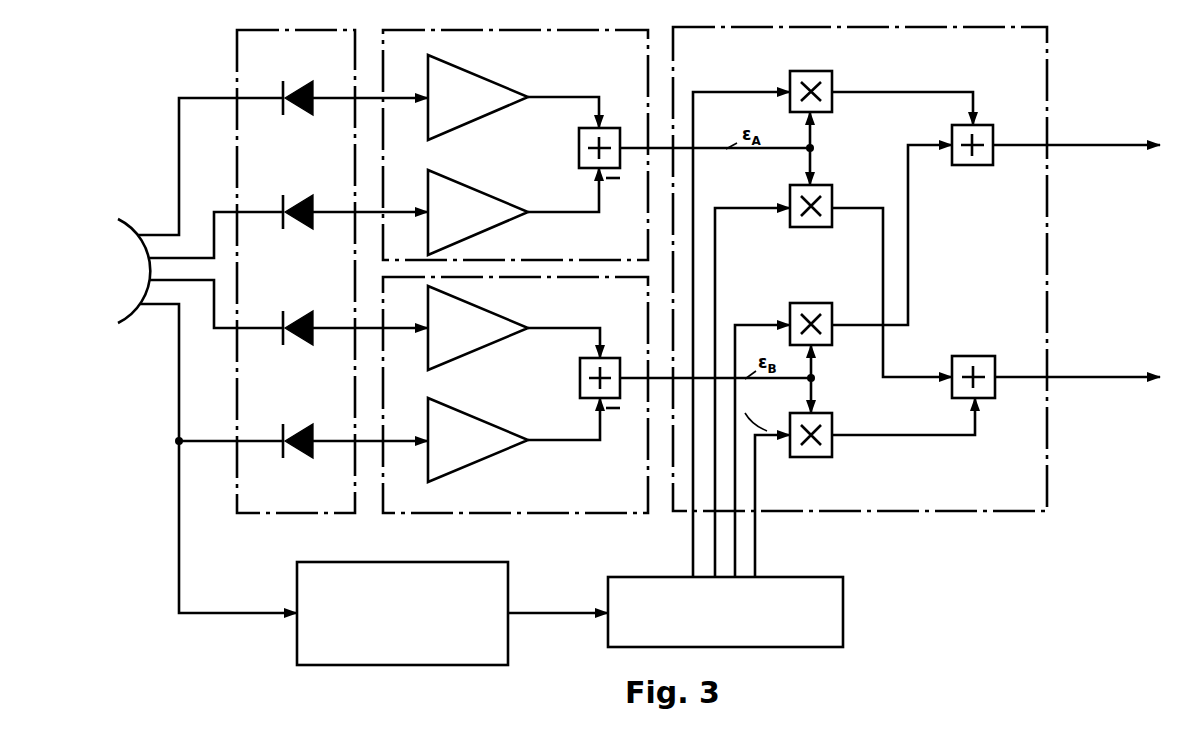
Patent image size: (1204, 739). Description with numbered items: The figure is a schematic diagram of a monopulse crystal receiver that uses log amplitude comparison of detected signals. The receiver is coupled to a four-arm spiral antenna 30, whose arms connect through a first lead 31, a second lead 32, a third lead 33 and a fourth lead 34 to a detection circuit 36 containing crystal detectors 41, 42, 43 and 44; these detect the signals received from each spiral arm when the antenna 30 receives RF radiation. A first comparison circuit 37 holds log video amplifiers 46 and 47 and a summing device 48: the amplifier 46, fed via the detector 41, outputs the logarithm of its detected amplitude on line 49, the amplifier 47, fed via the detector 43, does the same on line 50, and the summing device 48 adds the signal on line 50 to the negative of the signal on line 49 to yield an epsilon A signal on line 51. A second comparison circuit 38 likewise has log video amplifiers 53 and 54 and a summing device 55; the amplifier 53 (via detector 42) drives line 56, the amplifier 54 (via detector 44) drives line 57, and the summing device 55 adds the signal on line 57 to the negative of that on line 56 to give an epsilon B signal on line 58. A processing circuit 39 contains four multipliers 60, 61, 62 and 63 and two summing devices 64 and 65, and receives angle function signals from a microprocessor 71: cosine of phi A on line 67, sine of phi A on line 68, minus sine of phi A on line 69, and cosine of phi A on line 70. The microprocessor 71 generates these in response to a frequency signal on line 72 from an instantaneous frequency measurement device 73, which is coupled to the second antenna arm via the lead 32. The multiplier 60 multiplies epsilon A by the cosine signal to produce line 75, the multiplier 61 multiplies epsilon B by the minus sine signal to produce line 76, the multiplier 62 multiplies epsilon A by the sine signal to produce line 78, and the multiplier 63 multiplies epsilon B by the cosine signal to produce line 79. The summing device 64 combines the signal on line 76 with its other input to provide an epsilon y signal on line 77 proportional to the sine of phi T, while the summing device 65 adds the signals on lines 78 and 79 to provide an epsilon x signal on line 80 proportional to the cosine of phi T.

The four-arm spiral antenna 30 is at (127, 217).
The first lead 31 is at (198, 256).
The second lead 32 is at (160, 308).
The third lead 33 is at (162, 233).
The fourth lead 34 is at (194, 283).
The detection circuit 36 is at (290, 30).
The first comparison circuit 37 is at (452, 30).
The second comparison circuit 38 is at (523, 513).
The processing circuit 39 is at (836, 27).
The crystal detector 41 is at (306, 203).
The crystal detector 42 is at (305, 432).
The crystal detector 43 is at (308, 88).
The crystal detector 44 is at (305, 320).
The log video amplifier 46 is at (475, 190).
The log video amplifier 47 is at (478, 73).
The summing device 48 is at (578, 142).
The line 49 is at (564, 210).
The line 50 is at (581, 95).
The line 51 is at (638, 150).
The log video amplifier 53 is at (466, 422).
The log video amplifier 54 is at (486, 306).
The summing device 55 is at (580, 372).
The line 56 is at (541, 438).
The line 57 is at (550, 326).
The line 58 is at (639, 382).
The multiplier 60 is at (836, 73).
The multiplier 61 is at (820, 303).
The multiplier 62 is at (834, 184).
The multiplier 63 is at (827, 412).
The summing device 64 is at (975, 166).
The summing device 65 is at (981, 355).
The line 67 is at (692, 530).
The line 68 is at (716, 226).
The line 69 is at (737, 466).
The line 70 is at (757, 539).
The microprocessor 71 is at (845, 584).
The line 72 is at (543, 611).
The instantaneous frequency measurement device 73 is at (413, 562).
The line 75 is at (931, 90).
The line 76 is at (912, 262).
The line 77 is at (1082, 146).
The line 78 is at (862, 208).
The line 79 is at (932, 433).
The line 80 is at (1067, 375).